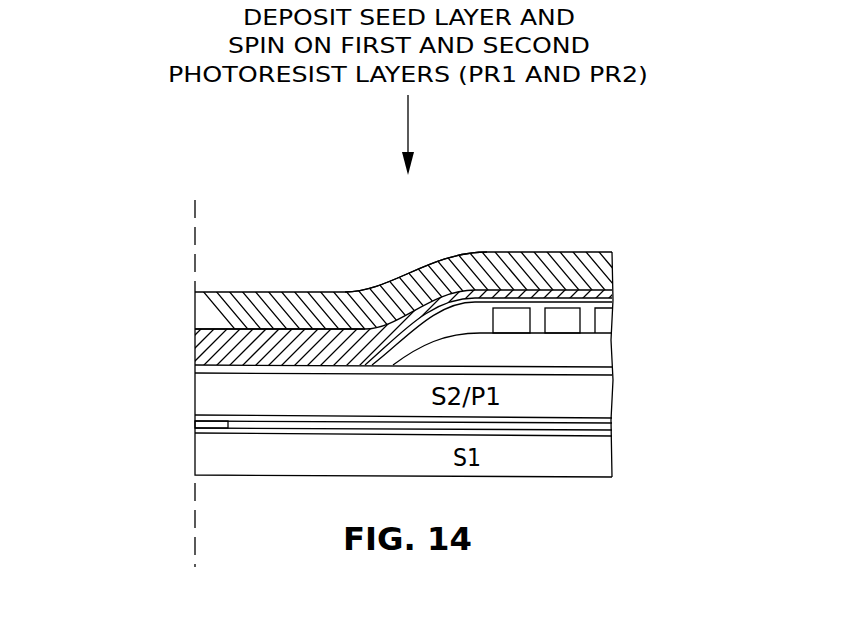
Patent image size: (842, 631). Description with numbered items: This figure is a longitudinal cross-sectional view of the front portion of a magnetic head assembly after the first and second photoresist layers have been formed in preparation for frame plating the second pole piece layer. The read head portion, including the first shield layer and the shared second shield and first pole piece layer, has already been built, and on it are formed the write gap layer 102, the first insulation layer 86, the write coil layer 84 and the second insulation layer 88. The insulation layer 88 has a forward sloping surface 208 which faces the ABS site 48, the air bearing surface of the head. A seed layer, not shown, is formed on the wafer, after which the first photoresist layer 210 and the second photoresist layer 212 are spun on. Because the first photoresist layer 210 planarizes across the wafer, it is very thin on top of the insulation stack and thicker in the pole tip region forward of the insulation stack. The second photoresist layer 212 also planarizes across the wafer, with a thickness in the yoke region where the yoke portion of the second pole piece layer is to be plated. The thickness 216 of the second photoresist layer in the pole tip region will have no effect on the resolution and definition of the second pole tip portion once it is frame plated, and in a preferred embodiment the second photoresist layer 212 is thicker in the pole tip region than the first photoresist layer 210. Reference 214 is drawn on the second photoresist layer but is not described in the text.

The ABS site 48 is at (195, 554).
The write coil layer 84 is at (565, 315).
The first insulation layer 86 is at (605, 348).
The second insulation layer 88 is at (438, 325).
The write gap layer 102 is at (195, 368).
The forward sloping surface 208 is at (390, 340).
The first photoresist layer 210 is at (230, 312).
The second photoresist layer 212 is at (334, 278).
The second photoresist layer PR2 214 is at (513, 260).
The thickness 216 is at (318, 298).